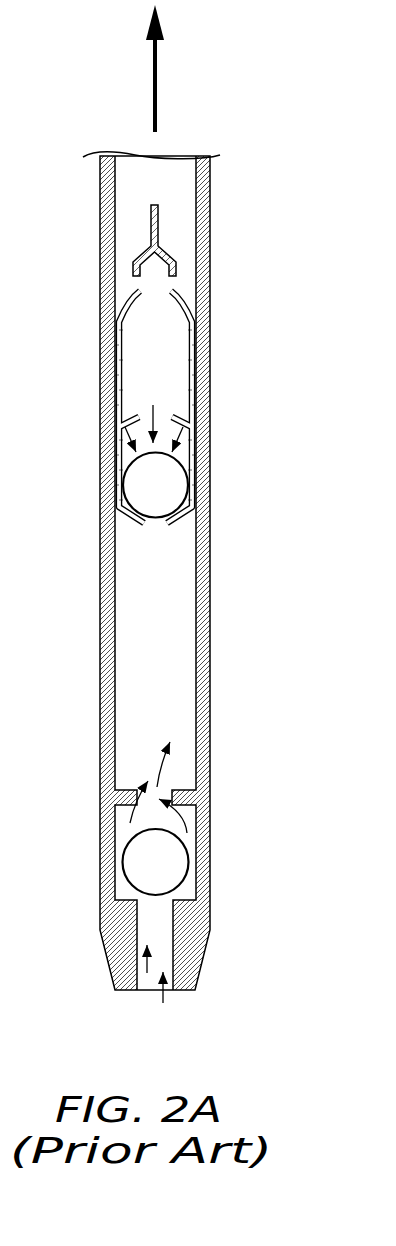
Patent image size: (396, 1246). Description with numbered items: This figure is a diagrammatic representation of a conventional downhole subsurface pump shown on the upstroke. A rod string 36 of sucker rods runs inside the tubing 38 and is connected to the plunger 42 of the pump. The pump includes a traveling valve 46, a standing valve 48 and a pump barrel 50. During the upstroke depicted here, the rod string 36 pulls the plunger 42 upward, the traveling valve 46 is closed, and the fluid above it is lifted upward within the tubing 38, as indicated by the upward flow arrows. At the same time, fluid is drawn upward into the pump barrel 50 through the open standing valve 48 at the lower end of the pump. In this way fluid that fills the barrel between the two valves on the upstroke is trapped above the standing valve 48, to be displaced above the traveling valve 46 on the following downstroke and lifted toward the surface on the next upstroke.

The tubing 38 is at (203, 193).
The rod string 36 is at (157, 230).
The plunger 42 is at (198, 337).
The traveling valve 46 is at (168, 470).
The pump barrel 50 is at (205, 607).
The standing valve 48 is at (168, 846).